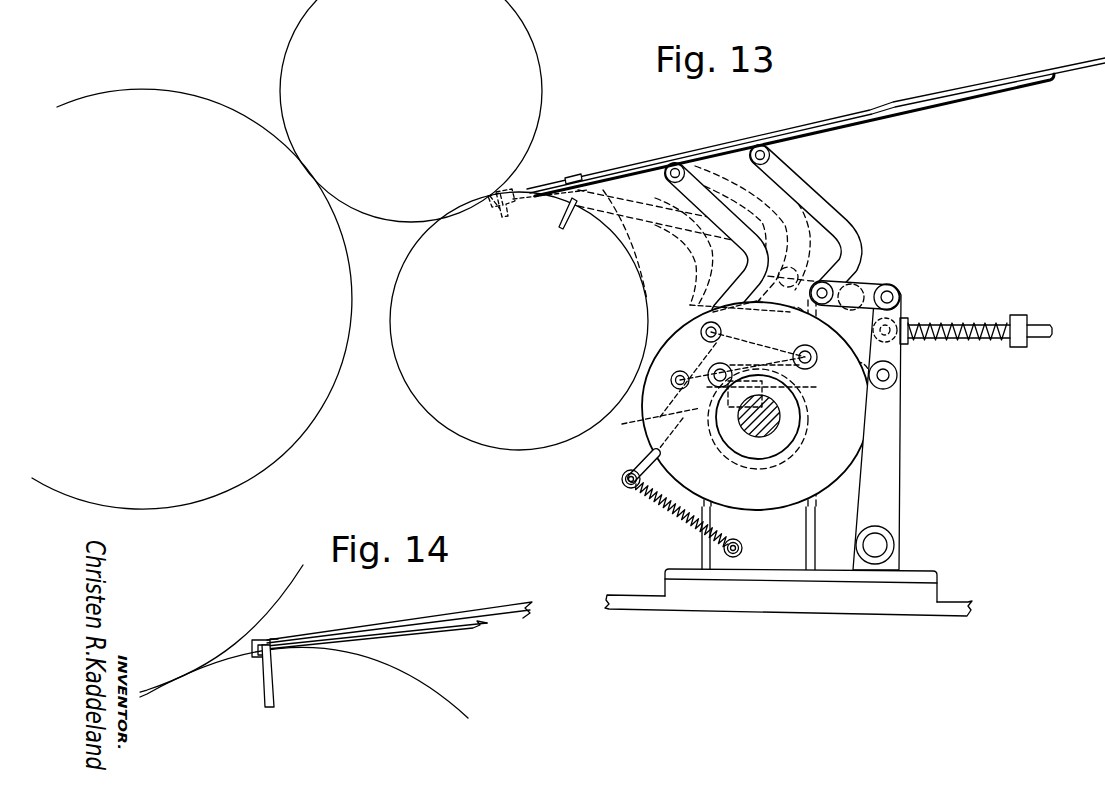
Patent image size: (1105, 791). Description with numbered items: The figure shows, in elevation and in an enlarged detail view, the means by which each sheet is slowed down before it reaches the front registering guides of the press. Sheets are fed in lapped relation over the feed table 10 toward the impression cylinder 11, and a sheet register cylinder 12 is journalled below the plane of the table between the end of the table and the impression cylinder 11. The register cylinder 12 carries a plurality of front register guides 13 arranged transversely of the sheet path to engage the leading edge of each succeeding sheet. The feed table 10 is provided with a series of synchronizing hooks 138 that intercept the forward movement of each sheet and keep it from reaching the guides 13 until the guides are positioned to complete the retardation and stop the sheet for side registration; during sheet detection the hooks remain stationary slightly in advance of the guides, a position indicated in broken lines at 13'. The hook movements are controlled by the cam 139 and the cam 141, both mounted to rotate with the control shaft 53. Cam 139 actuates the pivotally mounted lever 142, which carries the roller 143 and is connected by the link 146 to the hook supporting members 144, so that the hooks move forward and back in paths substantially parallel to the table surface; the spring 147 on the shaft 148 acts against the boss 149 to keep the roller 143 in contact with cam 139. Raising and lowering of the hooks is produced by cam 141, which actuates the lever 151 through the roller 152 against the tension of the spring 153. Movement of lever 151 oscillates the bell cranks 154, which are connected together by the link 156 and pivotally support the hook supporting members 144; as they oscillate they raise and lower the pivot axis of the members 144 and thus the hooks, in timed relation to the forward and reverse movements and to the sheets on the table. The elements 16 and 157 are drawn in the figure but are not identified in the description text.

In FIG. 13, the feed table 10 is at (862, 122).
In FIG. 14, the feed table 10 is at (483, 622).
In FIG. 13, the impression cylinder 11 is at (358, 298).
In FIG. 13, the sheet register cylinder 12 is at (397, 350).
In FIG. 14, the sheet register cylinder 12 is at (425, 683).
In FIG. 13, the front register guides 13 is at (575, 225).
In FIG. 14, the front register guides 13 is at (247, 676).
In FIG. 13, the position of synchronizing hooks 13' is at (539, 185).
In FIG. 13, the roller 16 is at (541, 103).
In FIG. 14, the roller 16 is at (292, 593).
In FIG. 13, the control shaft 53 is at (759, 427).
In FIG. 13, the synchronizing hooks 138 is at (569, 172).
In FIG. 14, the synchronizing hooks 138 is at (270, 640).
In FIG. 13, the cam 139 is at (825, 482).
In FIG. 13, the cam 141 is at (735, 470).
In FIG. 13, the lever 142 is at (892, 438).
In FIG. 13, the roller 143 is at (898, 377).
In FIG. 13, the hook supporting members 144 is at (822, 208).
In FIG. 13, the link 146 is at (870, 282).
In FIG. 13, the spring 147 is at (966, 320).
In FIG. 13, the shaft 148 is at (1040, 324).
In FIG. 13, the boss 149 is at (1018, 315).
In FIG. 13, the lever 151 is at (634, 457).
In FIG. 13, the roller 152 is at (643, 433).
In FIG. 13, the spring 153 is at (667, 512).
In FIG. 13, the bell cranks 154 is at (690, 353).
In FIG. 13, the link 156 is at (712, 322).
In FIG. 13, the blade tip 157 is at (492, 202).